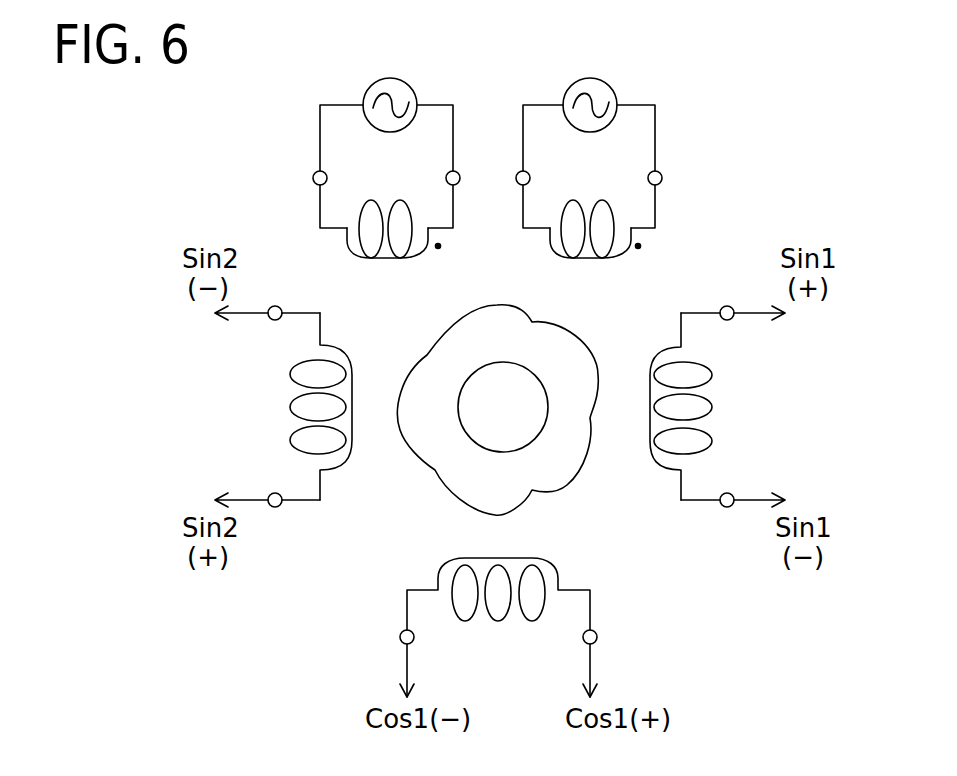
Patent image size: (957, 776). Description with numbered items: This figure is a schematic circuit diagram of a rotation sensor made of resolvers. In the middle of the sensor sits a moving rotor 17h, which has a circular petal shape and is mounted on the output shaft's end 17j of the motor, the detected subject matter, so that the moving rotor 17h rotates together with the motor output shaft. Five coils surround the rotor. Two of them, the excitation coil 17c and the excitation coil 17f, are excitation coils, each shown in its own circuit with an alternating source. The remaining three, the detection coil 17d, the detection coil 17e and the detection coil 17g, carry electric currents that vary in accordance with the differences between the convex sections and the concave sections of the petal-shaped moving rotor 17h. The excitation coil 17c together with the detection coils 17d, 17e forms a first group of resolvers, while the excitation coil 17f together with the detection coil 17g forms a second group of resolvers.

The excitation coil 17f is at (370, 212).
The excitation coil 17c is at (623, 218).
The detection coil 17g is at (290, 407).
The detection coil 17d is at (718, 410).
The detection coil 17e is at (530, 630).
The moving rotor 17h is at (435, 470).
The output shaft's end 17j is at (525, 450).